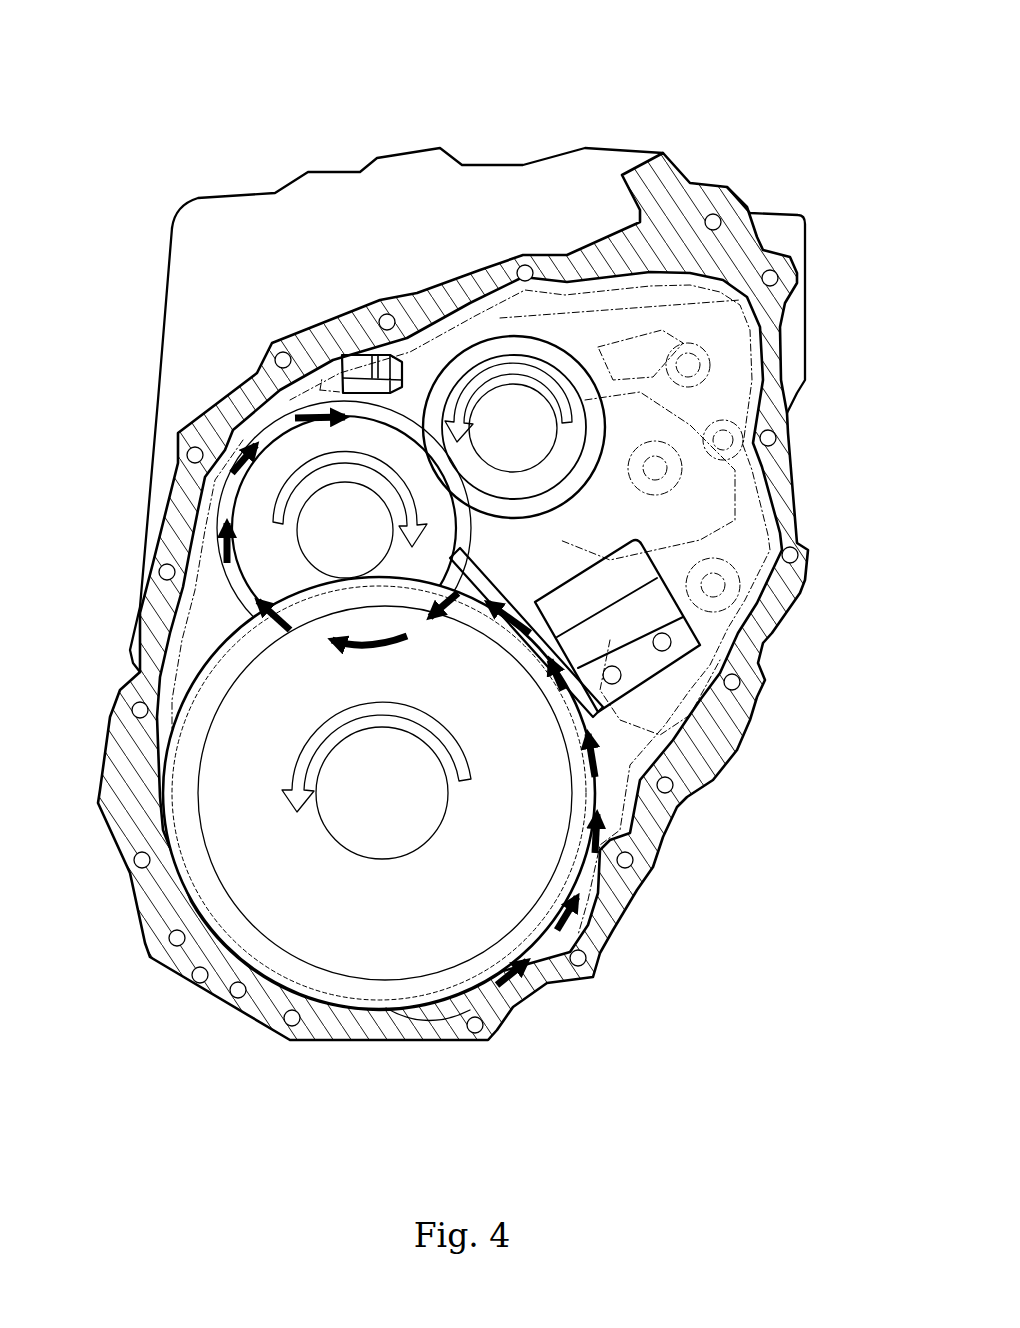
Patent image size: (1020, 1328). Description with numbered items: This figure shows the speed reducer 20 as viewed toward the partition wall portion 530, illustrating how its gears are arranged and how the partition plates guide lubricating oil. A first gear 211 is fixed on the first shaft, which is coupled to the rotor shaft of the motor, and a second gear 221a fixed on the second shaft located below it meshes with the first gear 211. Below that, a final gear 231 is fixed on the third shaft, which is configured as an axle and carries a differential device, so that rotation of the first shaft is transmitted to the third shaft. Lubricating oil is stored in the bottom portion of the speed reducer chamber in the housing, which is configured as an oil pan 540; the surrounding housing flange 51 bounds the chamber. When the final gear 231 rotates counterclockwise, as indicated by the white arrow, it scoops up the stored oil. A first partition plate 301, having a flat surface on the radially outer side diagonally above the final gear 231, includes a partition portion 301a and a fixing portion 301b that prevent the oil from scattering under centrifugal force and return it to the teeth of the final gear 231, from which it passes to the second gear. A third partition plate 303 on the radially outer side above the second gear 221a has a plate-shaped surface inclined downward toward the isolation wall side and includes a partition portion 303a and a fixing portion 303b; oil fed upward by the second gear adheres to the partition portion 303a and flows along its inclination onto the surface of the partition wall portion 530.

The speed reducer 20 is at (546, 203).
The housing flange 51 is at (722, 187).
The first gear 211 is at (490, 345).
The second gear 221a is at (247, 490).
The final gear 231 is at (293, 967).
The third partition plate 303 is at (253, 294).
The partition portion 303a is at (380, 373).
The fixing portion 303b is at (325, 385).
The partition wall portion 530 is at (635, 355).
The first partition plate 301 is at (672, 582).
The partition portion 301a is at (490, 573).
The fixing portion 301b is at (632, 664).
The oil pan 540 is at (470, 1012).